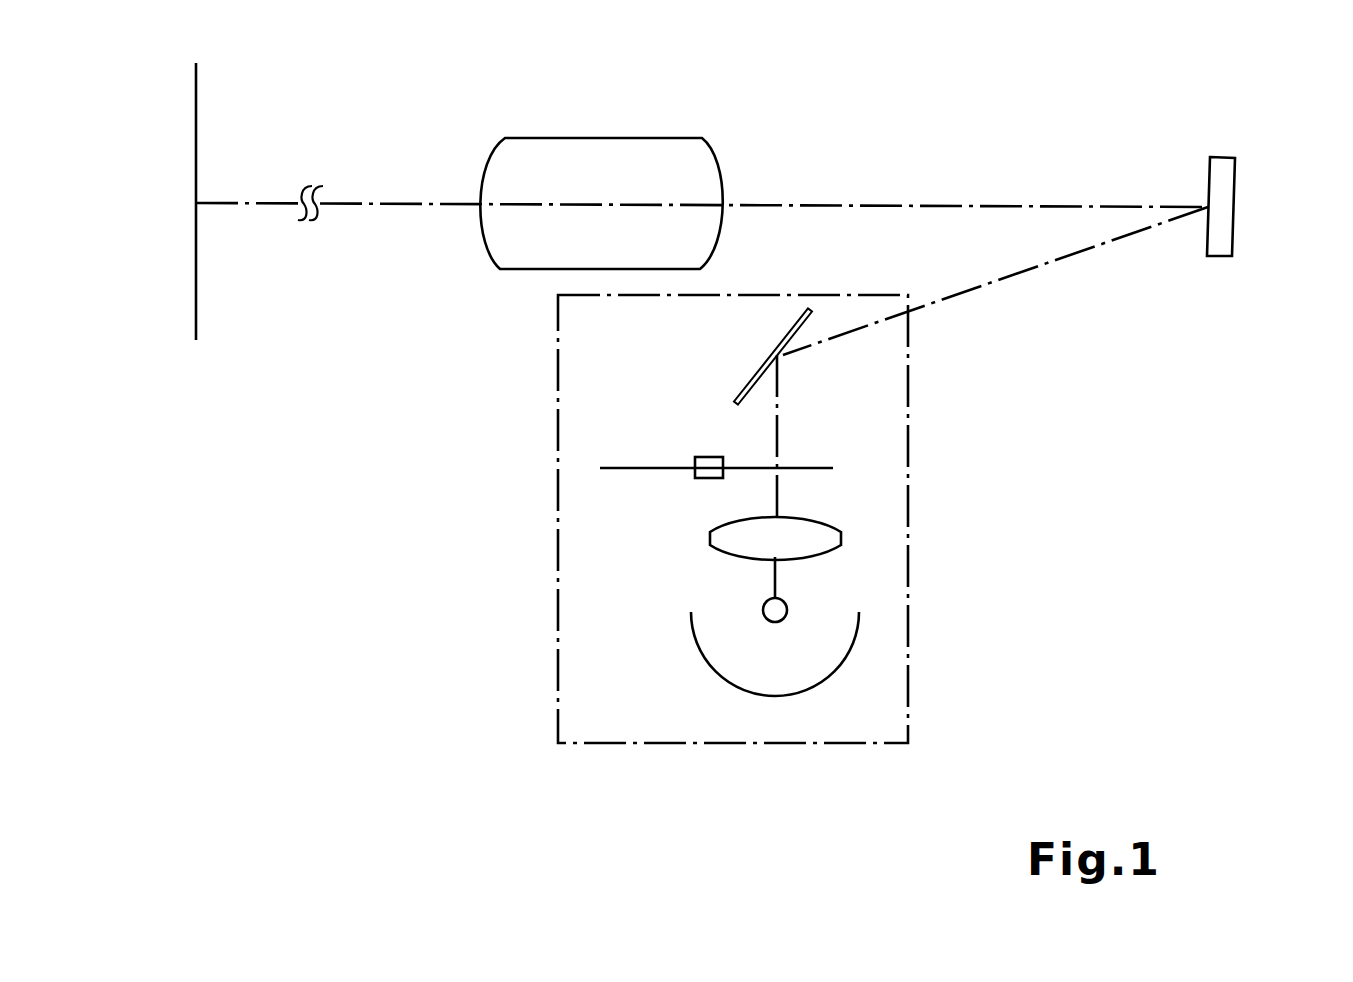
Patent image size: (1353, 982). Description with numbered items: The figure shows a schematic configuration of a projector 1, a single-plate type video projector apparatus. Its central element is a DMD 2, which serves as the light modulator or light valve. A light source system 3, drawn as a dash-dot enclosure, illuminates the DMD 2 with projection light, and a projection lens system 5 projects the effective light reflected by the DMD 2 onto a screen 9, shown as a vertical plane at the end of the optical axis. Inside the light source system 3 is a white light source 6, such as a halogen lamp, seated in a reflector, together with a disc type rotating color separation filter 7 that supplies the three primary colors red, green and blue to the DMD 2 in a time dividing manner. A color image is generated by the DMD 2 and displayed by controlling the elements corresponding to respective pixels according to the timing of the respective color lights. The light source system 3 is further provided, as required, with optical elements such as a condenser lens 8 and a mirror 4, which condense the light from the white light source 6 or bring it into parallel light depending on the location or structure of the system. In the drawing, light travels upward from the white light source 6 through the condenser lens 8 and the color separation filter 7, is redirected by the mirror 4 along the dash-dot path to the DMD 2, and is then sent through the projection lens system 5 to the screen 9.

The projector 1 is at (320, 438).
The DMD 2 is at (1238, 186).
The light source system 3 is at (917, 488).
The mirror 4 is at (755, 363).
The projection lens system 5 is at (607, 148).
The white light source 6 is at (835, 622).
The rotating color separation filter 7 is at (685, 460).
The condenser lens 8 is at (710, 540).
The screen 9 is at (202, 107).